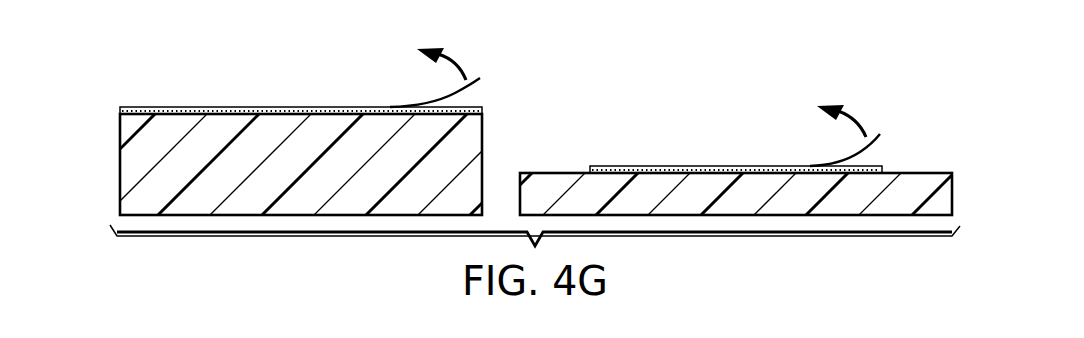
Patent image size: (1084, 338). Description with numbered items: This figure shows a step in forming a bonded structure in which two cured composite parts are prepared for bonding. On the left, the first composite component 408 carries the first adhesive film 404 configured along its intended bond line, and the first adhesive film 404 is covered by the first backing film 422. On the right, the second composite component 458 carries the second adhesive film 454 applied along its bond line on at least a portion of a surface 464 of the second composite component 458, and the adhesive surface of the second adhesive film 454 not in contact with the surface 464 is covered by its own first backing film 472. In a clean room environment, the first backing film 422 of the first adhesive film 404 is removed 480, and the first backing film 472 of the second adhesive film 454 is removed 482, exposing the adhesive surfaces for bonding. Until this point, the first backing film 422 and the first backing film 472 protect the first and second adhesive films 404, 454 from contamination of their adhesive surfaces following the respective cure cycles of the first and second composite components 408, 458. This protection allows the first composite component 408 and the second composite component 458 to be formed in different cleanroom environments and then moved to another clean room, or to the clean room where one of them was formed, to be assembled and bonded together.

The first composite component 408 is at (127, 165).
The first backing film 422 is at (228, 108).
The first adhesive film 404 is at (337, 108).
The removal of the first backing film 480 is at (462, 70).
The surface 464 is at (558, 173).
The first backing film 472 is at (662, 166).
The second adhesive film 454 is at (762, 167).
The removal of the first backing film 482 is at (864, 126).
The second composite component 458 is at (919, 182).